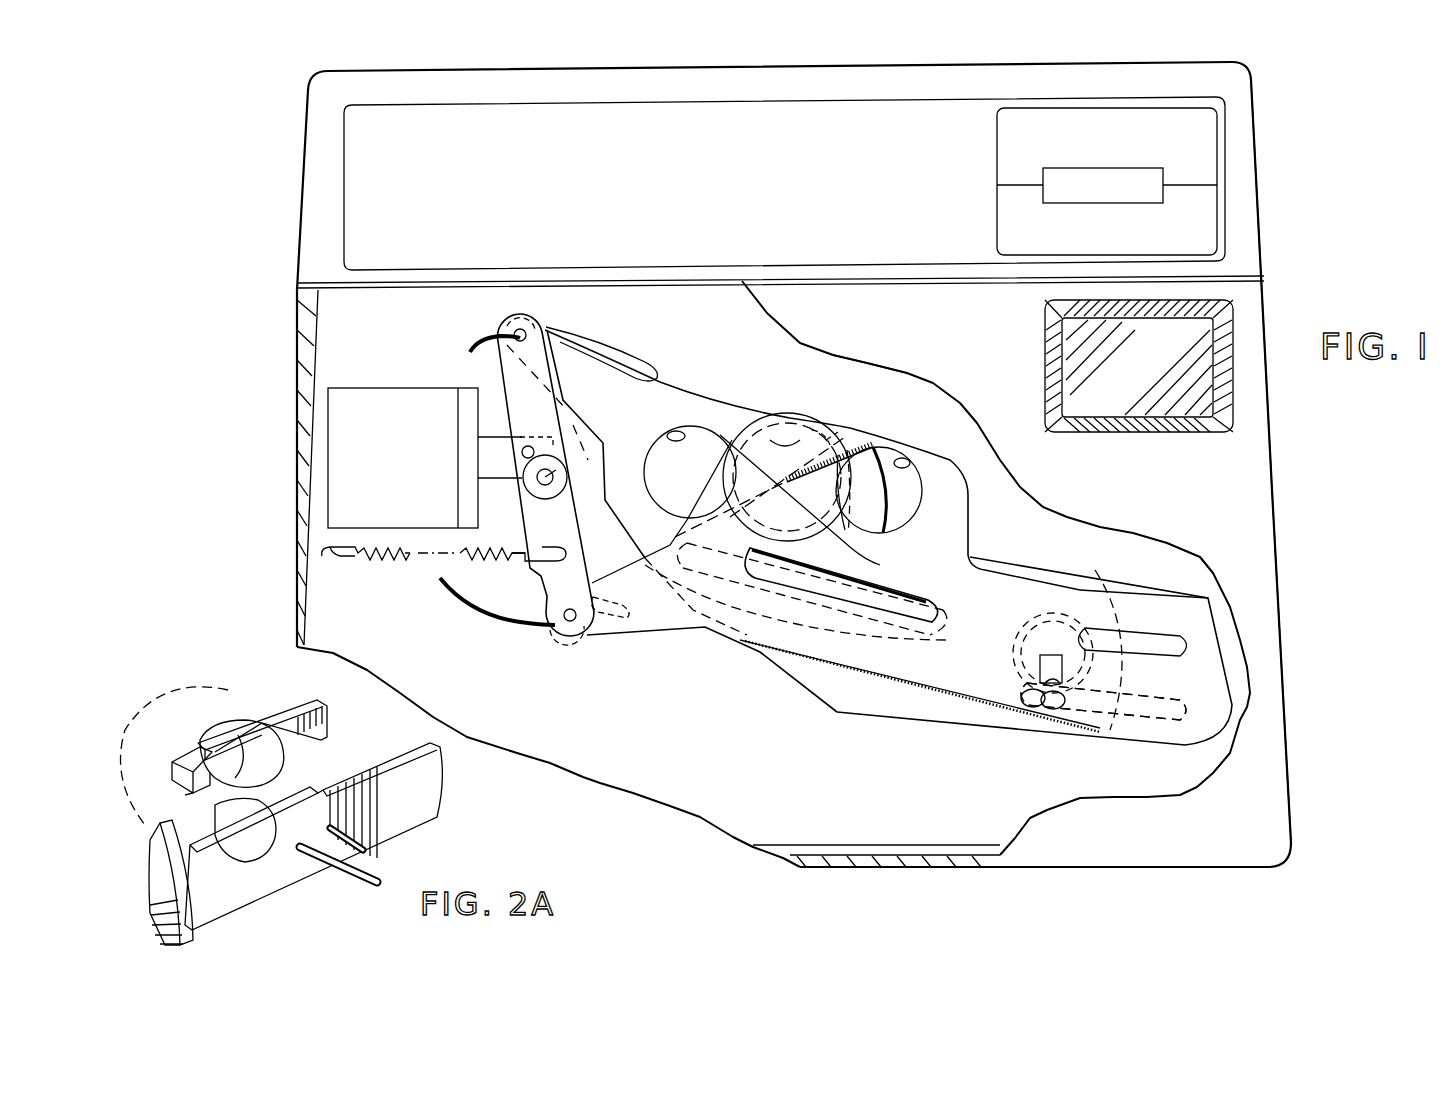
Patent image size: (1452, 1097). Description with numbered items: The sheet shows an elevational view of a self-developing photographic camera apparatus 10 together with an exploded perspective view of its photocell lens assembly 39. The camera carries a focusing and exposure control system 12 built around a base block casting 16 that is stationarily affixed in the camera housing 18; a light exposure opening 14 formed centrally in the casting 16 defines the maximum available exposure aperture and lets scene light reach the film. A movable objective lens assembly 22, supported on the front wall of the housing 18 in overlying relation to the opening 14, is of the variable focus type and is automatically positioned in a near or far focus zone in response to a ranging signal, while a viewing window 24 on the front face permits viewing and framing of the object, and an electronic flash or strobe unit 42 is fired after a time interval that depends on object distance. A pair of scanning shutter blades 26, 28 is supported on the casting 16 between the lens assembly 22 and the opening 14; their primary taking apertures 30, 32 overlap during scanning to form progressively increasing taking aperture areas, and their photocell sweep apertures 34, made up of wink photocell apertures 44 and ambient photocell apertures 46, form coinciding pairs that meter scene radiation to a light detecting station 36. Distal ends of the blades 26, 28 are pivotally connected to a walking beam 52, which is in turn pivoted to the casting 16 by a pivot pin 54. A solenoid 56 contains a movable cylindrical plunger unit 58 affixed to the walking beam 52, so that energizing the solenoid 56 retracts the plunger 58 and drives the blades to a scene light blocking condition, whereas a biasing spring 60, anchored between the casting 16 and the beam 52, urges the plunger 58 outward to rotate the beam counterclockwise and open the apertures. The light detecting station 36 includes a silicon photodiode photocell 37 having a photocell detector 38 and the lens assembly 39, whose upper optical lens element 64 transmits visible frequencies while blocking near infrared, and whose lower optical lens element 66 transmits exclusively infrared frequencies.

In FIG. 1, the photographic camera apparatus 10 is at (1297, 512).
In FIG. 1, the focusing and exposure control system 12 is at (1050, 535).
In FIG. 1, the light exposure opening 14 is at (805, 417).
In FIG. 1, the base block casting 16 is at (937, 419).
In FIG. 1, the camera housing 18 is at (1234, 488).
In FIG. 1, the movable objective lens assembly 22 is at (840, 430).
In FIG. 1, the viewing window 24 is at (1144, 374).
In FIG. 1, the scanning shutter blade 26 is at (958, 503).
In FIG. 1, the scanning shutter blade 28 is at (713, 412).
In FIG. 1, the primary taking aperture 30 is at (905, 464).
In FIG. 1, the primary taking aperture 32 is at (675, 432).
In FIG. 1, the photocell sweep apertures 34 is at (1118, 608).
In FIG. 1, the light detecting station 36 is at (1082, 585).
In FIG. 2A, the photocell 37 is at (152, 830).
In FIG. 2A, the photocell detector 38 is at (132, 692).
In FIG. 2A, the photocell lens assembly 39 is at (270, 711).
In FIG. 1, the electronic flash or strobe unit 42 is at (1258, 140).
In FIG. 1, the wink photocell apertures 44 is at (1027, 707).
In FIG. 1, the ambient photocell apertures 46 is at (990, 625).
In FIG. 1, the walking beam 52 is at (572, 538).
In FIG. 1, the pivot pin 54 is at (560, 466).
In FIG. 1, the solenoid 56 is at (383, 395).
In FIG. 1, the plunger unit 58 is at (497, 446).
In FIG. 1, the biasing spring 60 is at (493, 545).
In FIG. 1, the upper optical lens element 64 is at (1047, 612).
In FIG. 2A, the upper optical lens element 64 is at (262, 769).
In FIG. 1, the lower optical lens element 66 is at (1090, 718).
In FIG. 2A, the lower optical lens element 66 is at (258, 855).